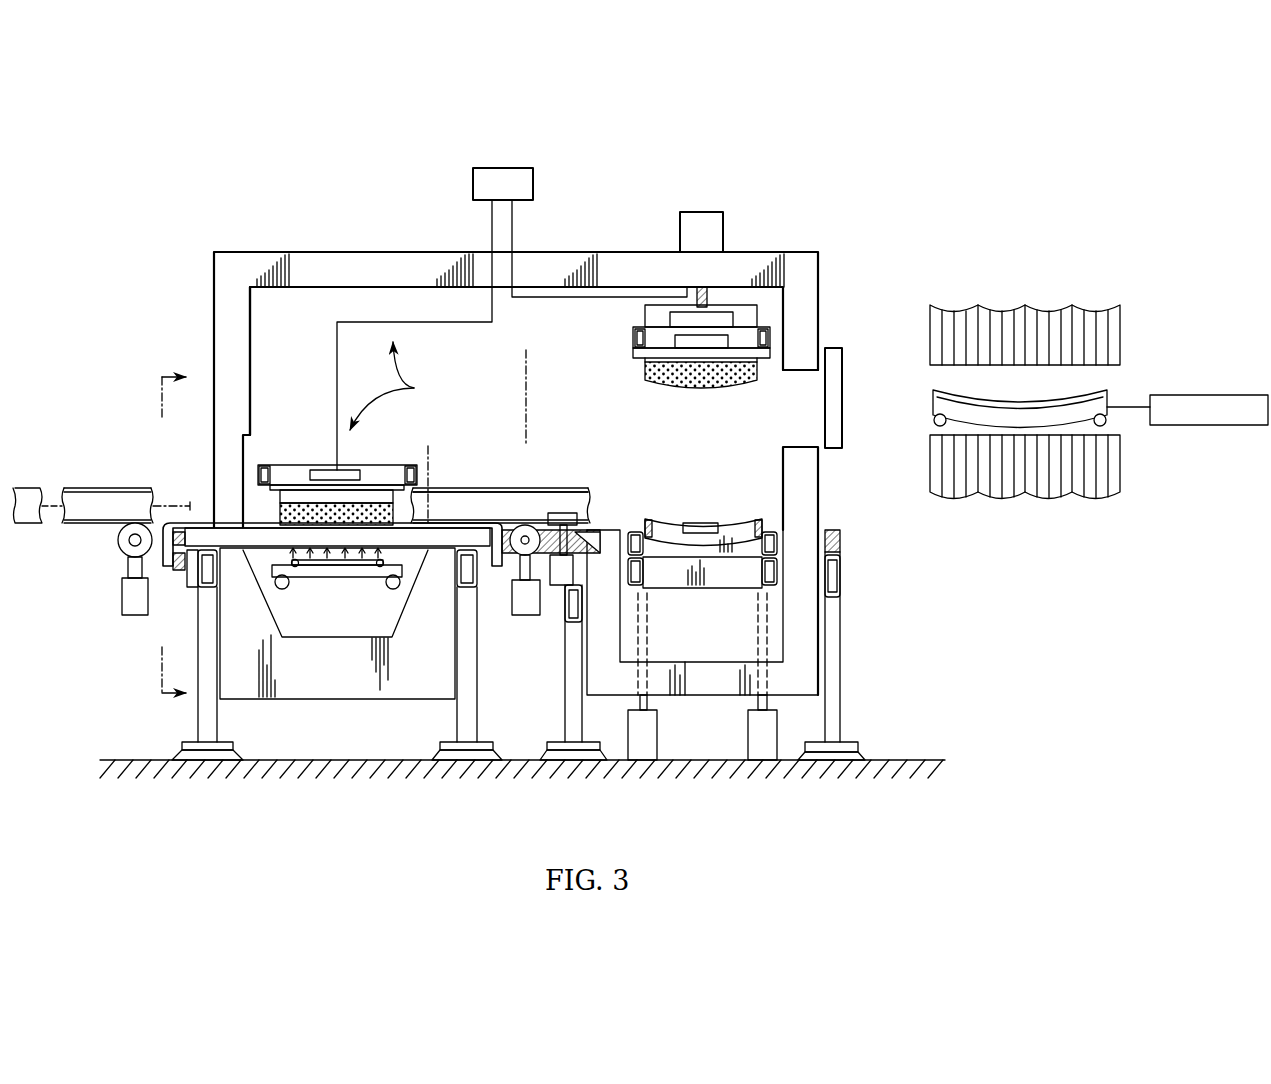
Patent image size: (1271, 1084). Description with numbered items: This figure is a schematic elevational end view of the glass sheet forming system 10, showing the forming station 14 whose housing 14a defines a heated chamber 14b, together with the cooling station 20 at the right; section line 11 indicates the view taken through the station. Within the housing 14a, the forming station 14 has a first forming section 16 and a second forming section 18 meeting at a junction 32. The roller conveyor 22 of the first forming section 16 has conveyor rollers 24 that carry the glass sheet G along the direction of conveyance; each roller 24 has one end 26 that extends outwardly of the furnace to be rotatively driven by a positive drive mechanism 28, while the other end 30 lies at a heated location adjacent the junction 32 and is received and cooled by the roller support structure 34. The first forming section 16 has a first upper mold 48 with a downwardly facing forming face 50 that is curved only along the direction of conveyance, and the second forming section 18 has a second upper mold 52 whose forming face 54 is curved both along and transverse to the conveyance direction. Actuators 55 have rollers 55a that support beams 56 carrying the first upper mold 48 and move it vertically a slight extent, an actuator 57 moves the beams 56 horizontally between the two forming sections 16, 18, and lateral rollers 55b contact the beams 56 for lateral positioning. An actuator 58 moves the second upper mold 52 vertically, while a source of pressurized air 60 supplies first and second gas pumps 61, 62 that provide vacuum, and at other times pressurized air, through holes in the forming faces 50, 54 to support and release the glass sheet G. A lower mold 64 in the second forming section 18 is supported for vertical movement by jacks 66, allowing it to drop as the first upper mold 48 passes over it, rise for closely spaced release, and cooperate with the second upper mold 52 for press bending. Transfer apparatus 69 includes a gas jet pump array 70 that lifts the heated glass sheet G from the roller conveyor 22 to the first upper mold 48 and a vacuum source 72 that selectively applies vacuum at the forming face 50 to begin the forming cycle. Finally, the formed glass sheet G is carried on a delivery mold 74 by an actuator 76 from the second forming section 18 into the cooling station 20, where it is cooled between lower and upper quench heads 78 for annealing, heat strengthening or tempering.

The glass sheet forming system 10 is at (683, 128).
The section line 11 is at (156, 535).
The forming station 14 is at (571, 240).
The housing 14a is at (308, 250).
The heated chamber 14b is at (510, 362).
The first forming section 16 is at (400, 237).
The second forming section 18 is at (795, 202).
The cooling station 20 is at (1065, 282).
The roller conveyor 22 is at (245, 513).
The conveyor rollers 24 is at (258, 522).
The roller end 26 is at (212, 570).
The positive drive mechanism 28 is at (172, 575).
The roller end 30 is at (447, 527).
The junction 32 is at (545, 362).
The roller support structure 34 is at (492, 516).
The first upper mold 48 is at (270, 500).
The forming face 50 is at (340, 512).
The second upper mold 52 is at (630, 370).
The forming face 54 is at (705, 388).
The actuators 55 is at (120, 598).
The rollers 55a is at (117, 540).
The lateral rollers 55b is at (562, 513).
The beams 56 is at (85, 488).
The actuator 57 is at (27, 488).
The actuator 58 is at (703, 212).
The source of pressurized air 60 is at (502, 168).
The first gas pump 61 is at (320, 465).
The second gas pump 62 is at (727, 306).
The lower mold 64 is at (632, 514).
The jacks 66 is at (745, 713).
The transfer apparatus 69 is at (415, 553).
The gas jet pump array 70 is at (272, 563).
The vacuum source 72 is at (395, 386).
The delivery mold 74 is at (1107, 400).
The actuator 76 is at (1210, 395).
The quench heads 78 is at (1123, 335).
The glass sheet G is at (430, 470).